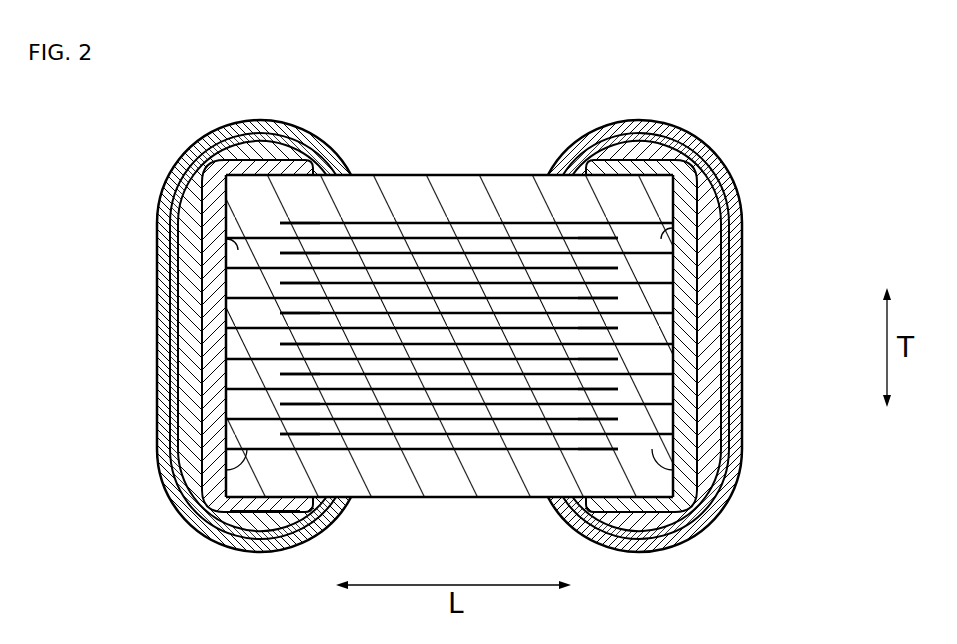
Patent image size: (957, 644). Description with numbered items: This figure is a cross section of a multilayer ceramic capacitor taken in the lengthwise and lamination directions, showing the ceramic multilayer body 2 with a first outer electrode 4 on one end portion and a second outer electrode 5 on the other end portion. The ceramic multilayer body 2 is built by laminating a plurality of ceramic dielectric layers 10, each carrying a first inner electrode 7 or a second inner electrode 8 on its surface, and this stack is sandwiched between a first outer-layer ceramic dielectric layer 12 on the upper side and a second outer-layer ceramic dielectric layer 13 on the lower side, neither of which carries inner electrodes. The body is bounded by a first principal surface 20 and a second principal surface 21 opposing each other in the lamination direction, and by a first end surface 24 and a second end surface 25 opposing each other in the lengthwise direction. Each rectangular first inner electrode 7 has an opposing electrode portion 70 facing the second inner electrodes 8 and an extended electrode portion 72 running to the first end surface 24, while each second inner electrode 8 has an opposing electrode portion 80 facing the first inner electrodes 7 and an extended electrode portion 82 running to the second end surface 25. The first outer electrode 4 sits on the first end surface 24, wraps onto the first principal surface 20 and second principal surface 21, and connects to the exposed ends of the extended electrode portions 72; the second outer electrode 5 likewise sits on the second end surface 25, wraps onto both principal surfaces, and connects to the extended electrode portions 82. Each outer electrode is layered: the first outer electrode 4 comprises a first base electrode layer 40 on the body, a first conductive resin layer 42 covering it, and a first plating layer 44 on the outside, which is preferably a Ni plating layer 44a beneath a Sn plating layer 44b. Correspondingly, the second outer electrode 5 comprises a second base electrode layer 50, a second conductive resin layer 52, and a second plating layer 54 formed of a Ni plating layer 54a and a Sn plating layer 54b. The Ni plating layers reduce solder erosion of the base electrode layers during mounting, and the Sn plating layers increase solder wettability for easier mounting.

The ceramic multilayer body 2 is at (380, 168).
The first outer electrode 4 is at (694, 132).
The second outer electrode 5 is at (206, 128).
The first inner electrode 7 is at (403, 253).
The second inner electrode 8 is at (455, 268).
The ceramic dielectric layer 10 is at (297, 232).
The first outer-layer ceramic dielectric layer 12 is at (283, 198).
The second outer-layer ceramic dielectric layer 13 is at (257, 510).
The first principal surface 20 is at (517, 173).
The second principal surface 21 is at (448, 497).
The first end surface 24 is at (675, 358).
The second end surface 25 is at (223, 405).
The first base electrode layer 40 is at (620, 157).
The first conductive resin layer 42 is at (653, 150).
The first plating layer 44 is at (822, 247).
The Ni plating layer 44a is at (730, 302).
The Sn plating layer 44b is at (743, 280).
The second base electrode layer 50 is at (272, 162).
The second conductive resin layer 52 is at (255, 148).
The second plating layer 54 is at (75, 280).
The Ni plating layer 54a is at (170, 328).
The Sn plating layer 54b is at (160, 310).
The opposing electrode portion 70 is at (415, 223).
The extended electrode portion 72 is at (675, 237).
The opposing electrode portion 80 is at (475, 238).
The extended electrode portion 82 is at (297, 248).